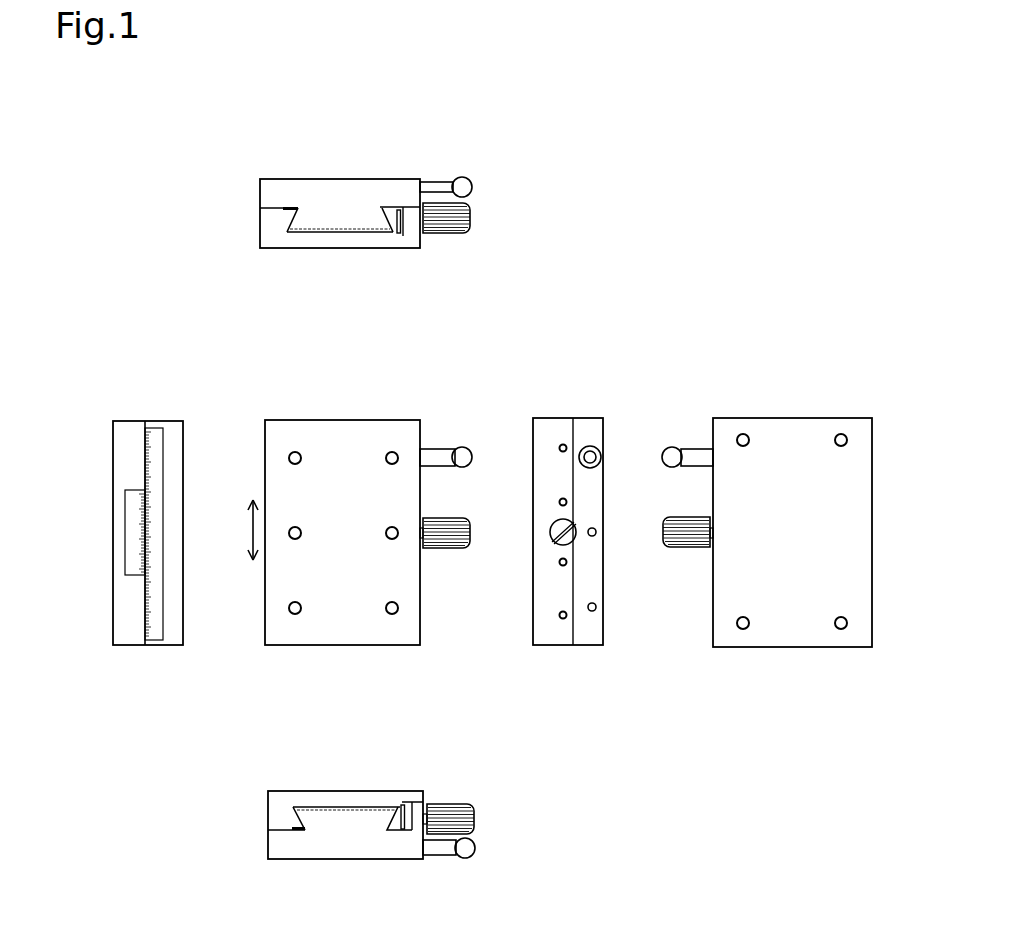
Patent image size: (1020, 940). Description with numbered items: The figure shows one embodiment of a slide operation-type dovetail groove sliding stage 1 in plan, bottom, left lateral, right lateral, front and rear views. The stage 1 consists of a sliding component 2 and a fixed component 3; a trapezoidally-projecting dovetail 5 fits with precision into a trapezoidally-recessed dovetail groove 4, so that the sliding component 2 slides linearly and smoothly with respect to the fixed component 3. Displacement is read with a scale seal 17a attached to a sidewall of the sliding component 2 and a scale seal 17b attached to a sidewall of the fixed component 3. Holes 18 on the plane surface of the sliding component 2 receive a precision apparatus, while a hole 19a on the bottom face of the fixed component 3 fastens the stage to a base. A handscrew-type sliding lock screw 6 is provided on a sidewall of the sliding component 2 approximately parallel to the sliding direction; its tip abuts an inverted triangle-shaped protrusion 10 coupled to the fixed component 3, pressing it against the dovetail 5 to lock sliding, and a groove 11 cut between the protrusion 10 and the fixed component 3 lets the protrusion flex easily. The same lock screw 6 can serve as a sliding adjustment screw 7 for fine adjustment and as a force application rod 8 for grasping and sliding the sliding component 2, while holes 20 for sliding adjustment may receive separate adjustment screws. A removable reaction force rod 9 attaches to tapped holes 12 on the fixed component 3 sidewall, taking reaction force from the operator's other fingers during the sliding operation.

The slide operation-type dovetail groove sliding stage 1 is at (606, 320).
The sliding component 2 is at (270, 240).
The fixed component 3 is at (399, 185).
The dovetail groove 4 is at (308, 230).
The dovetail 5 is at (352, 222).
The sliding lock screw 6 is at (566, 518).
The sliding adjustment screw 7 is at (450, 564).
The force application rod 8 is at (447, 550).
The reaction force rod 9 is at (472, 186).
The inverted triangle-shaped protrusion 10 is at (392, 228).
The groove 11 is at (406, 229).
The tapped holes for reaction force rod 12 is at (597, 528).
The scale seal 17a is at (164, 454).
The scale seal 17b is at (127, 515).
The holes for mounting a precision apparatus 18 is at (296, 617).
The hole for fixedly fastening to a base 19a is at (745, 433).
The holes for sliding adjustment 20 is at (563, 443).